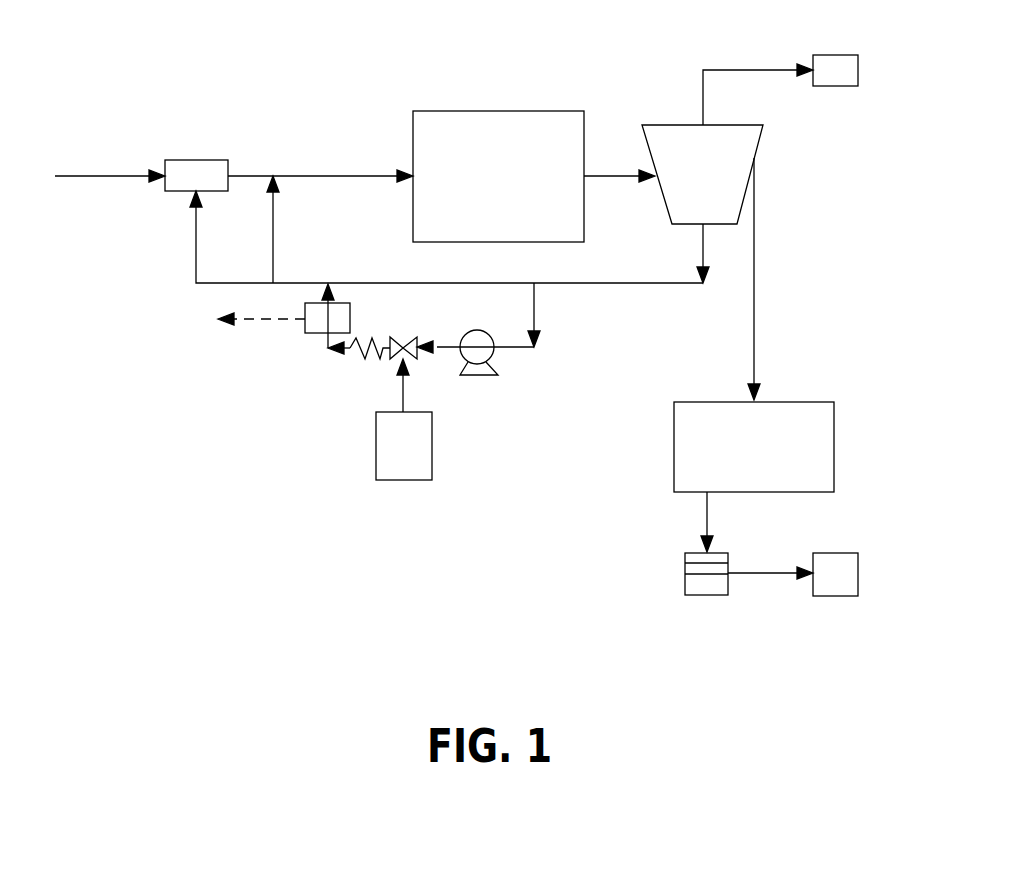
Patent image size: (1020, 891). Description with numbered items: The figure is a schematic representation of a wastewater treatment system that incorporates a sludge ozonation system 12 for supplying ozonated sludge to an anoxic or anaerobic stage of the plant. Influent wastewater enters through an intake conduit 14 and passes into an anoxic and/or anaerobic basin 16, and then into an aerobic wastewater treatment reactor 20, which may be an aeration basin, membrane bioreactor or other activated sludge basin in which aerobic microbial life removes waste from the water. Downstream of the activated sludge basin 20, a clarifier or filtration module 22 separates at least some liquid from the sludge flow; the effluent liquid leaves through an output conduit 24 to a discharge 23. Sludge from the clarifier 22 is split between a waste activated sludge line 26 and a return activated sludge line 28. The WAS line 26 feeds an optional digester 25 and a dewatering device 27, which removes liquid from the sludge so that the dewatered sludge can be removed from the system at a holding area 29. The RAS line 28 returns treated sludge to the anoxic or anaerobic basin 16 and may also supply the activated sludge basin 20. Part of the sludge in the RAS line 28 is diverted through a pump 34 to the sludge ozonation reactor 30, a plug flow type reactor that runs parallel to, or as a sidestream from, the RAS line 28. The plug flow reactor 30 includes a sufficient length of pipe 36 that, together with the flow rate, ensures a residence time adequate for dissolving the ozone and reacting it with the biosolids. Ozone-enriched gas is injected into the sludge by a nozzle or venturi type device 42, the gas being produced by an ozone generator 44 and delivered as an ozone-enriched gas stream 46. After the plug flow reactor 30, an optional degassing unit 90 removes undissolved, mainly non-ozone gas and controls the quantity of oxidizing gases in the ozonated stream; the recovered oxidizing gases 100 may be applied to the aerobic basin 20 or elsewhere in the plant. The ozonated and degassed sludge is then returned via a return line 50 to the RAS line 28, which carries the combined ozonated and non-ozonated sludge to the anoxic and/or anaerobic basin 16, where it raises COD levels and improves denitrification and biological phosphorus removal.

The sludge ozonation system 12 is at (173, 448).
The intake conduit 14 is at (103, 173).
The anoxic and/or anaerobic basin 16 is at (200, 160).
The aerobic wastewater treatment reactor 20 is at (491, 111).
The clarifier or filtration module 22 is at (758, 147).
The discharge 23 is at (838, 55).
The output conduit 24 is at (747, 70).
The digester 25 is at (834, 440).
The waste activated sludge (WAS) line 26 is at (754, 272).
The dewatering device 27 is at (708, 595).
The return activated sludge (RAS) line 28 is at (627, 282).
The holding area 29 is at (835, 553).
The sludge ozonation reactor 30 is at (512, 435).
The pump 34 is at (495, 353).
The pipe 36 is at (360, 357).
The nozzle or venturi type device 42 is at (405, 337).
The ozone generator 44 is at (376, 460).
The ozone-enriched gas stream 46 is at (403, 388).
The return line 50 is at (332, 302).
The degassing unit 90 is at (350, 320).
The oxidizing gases 100 is at (255, 320).